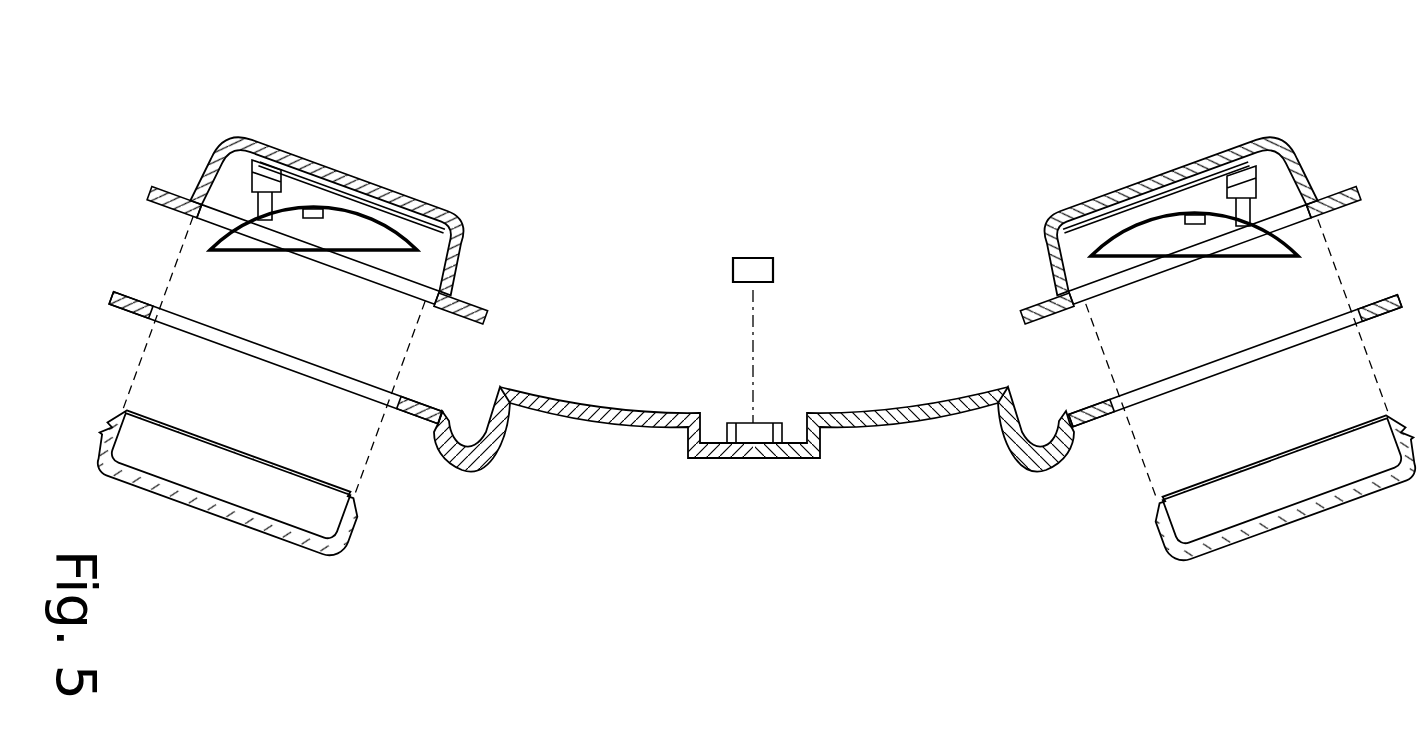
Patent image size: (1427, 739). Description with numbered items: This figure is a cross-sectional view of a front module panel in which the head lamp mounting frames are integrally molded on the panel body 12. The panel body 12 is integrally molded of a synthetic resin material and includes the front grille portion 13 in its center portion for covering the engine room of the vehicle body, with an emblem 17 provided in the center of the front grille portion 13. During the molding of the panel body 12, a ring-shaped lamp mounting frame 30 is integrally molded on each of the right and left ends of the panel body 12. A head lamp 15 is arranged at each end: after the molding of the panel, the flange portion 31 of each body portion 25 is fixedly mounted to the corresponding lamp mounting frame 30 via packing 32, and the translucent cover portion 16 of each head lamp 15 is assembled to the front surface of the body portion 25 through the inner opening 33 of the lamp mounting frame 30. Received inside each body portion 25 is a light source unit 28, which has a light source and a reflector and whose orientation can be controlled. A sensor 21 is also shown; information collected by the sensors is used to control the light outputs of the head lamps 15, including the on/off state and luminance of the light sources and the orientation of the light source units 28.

The panel body 12 is at (452, 472).
The front grille portion 13 is at (881, 410).
The head lamp 15 is at (343, 142).
The translucent cover portion 16 is at (172, 515).
The emblem 17 is at (703, 459).
The sensor 21 is at (753, 264).
The body portion 25 is at (427, 195).
The light source unit 28 is at (284, 245).
The lamp mounting frame 30 is at (128, 289).
The flange portion 31 is at (165, 185).
The packing 32 is at (452, 328).
The inner opening 33 is at (301, 366).